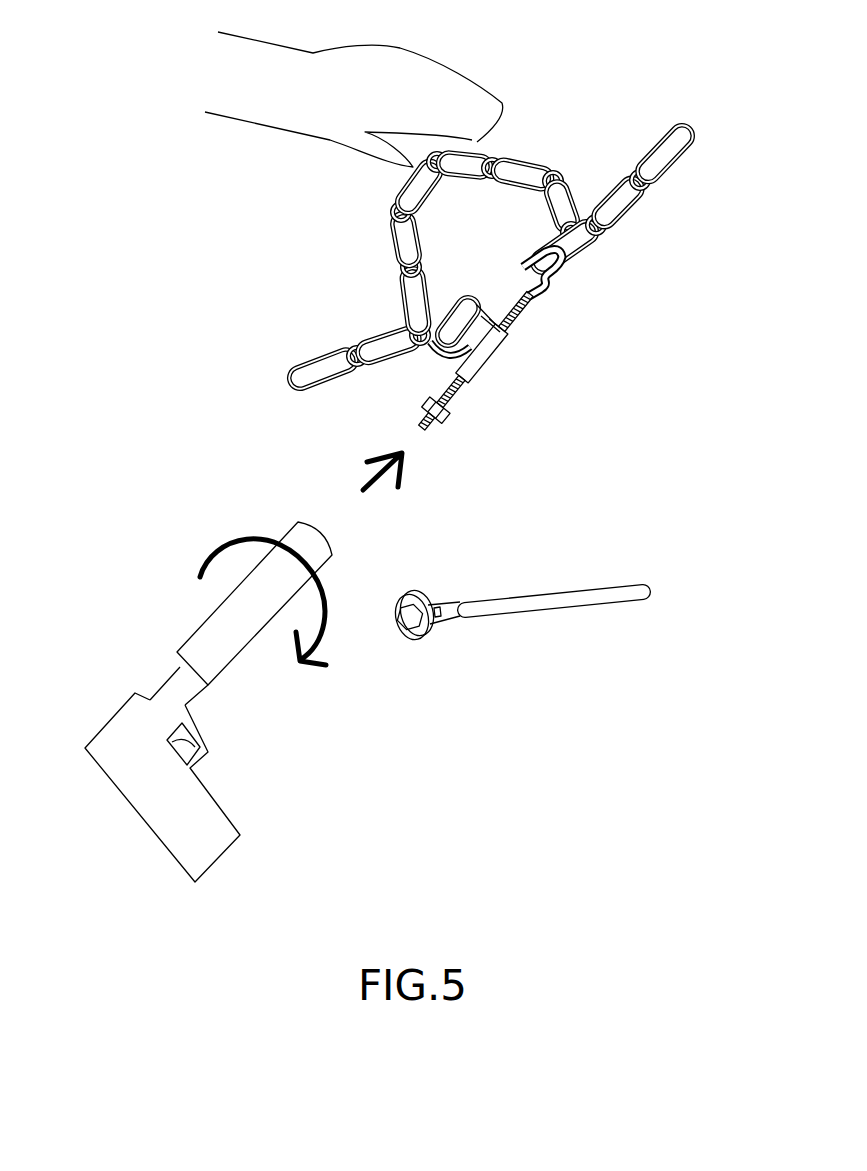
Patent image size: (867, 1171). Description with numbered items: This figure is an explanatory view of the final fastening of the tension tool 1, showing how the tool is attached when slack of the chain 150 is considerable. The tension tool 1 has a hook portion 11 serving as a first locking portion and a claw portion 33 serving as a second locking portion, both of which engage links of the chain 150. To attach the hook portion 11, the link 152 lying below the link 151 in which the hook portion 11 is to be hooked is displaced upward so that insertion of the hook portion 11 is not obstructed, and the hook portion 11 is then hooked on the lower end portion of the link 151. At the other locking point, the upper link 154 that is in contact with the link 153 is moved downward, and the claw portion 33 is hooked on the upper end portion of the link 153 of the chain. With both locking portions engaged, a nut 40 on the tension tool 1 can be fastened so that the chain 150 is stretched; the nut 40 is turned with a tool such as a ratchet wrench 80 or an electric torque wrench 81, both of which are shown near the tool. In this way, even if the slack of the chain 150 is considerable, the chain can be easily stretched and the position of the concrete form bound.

The tension tool 1 is at (499, 351).
The hook portion 11 is at (538, 258).
The claw portion 33 is at (462, 298).
The nut 40 is at (450, 416).
The ratchet wrench 80 is at (498, 607).
The electric torque wrench 81 is at (168, 708).
The chain 150 is at (493, 194).
The link 151 is at (583, 250).
The link 152 is at (573, 193).
The link 153 is at (416, 357).
The upper link 154 is at (405, 307).